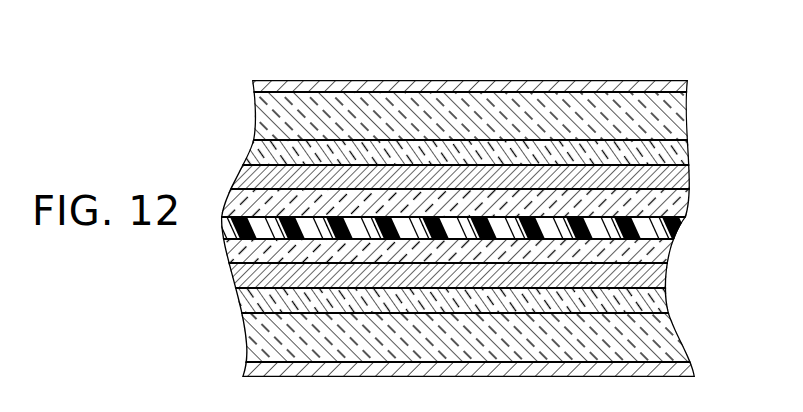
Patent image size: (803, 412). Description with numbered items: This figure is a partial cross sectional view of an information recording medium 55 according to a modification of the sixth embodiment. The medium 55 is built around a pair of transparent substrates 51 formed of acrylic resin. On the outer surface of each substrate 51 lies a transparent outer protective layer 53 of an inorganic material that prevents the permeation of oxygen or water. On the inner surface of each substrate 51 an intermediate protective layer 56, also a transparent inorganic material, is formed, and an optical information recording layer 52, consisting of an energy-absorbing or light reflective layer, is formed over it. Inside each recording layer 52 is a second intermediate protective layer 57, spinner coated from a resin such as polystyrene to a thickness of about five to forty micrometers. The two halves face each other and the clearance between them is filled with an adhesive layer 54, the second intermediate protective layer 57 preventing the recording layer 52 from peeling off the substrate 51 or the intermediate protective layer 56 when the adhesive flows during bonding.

The transparent substrate 51 is at (681, 112).
The optical information recording layer 52 is at (688, 182).
The outer protective layer 53 is at (652, 81).
The adhesive layer 54 is at (672, 237).
The information recording medium 55 is at (586, 76).
The intermediate protective layer 56 is at (684, 155).
The second intermediate protective layer 57 is at (683, 214).